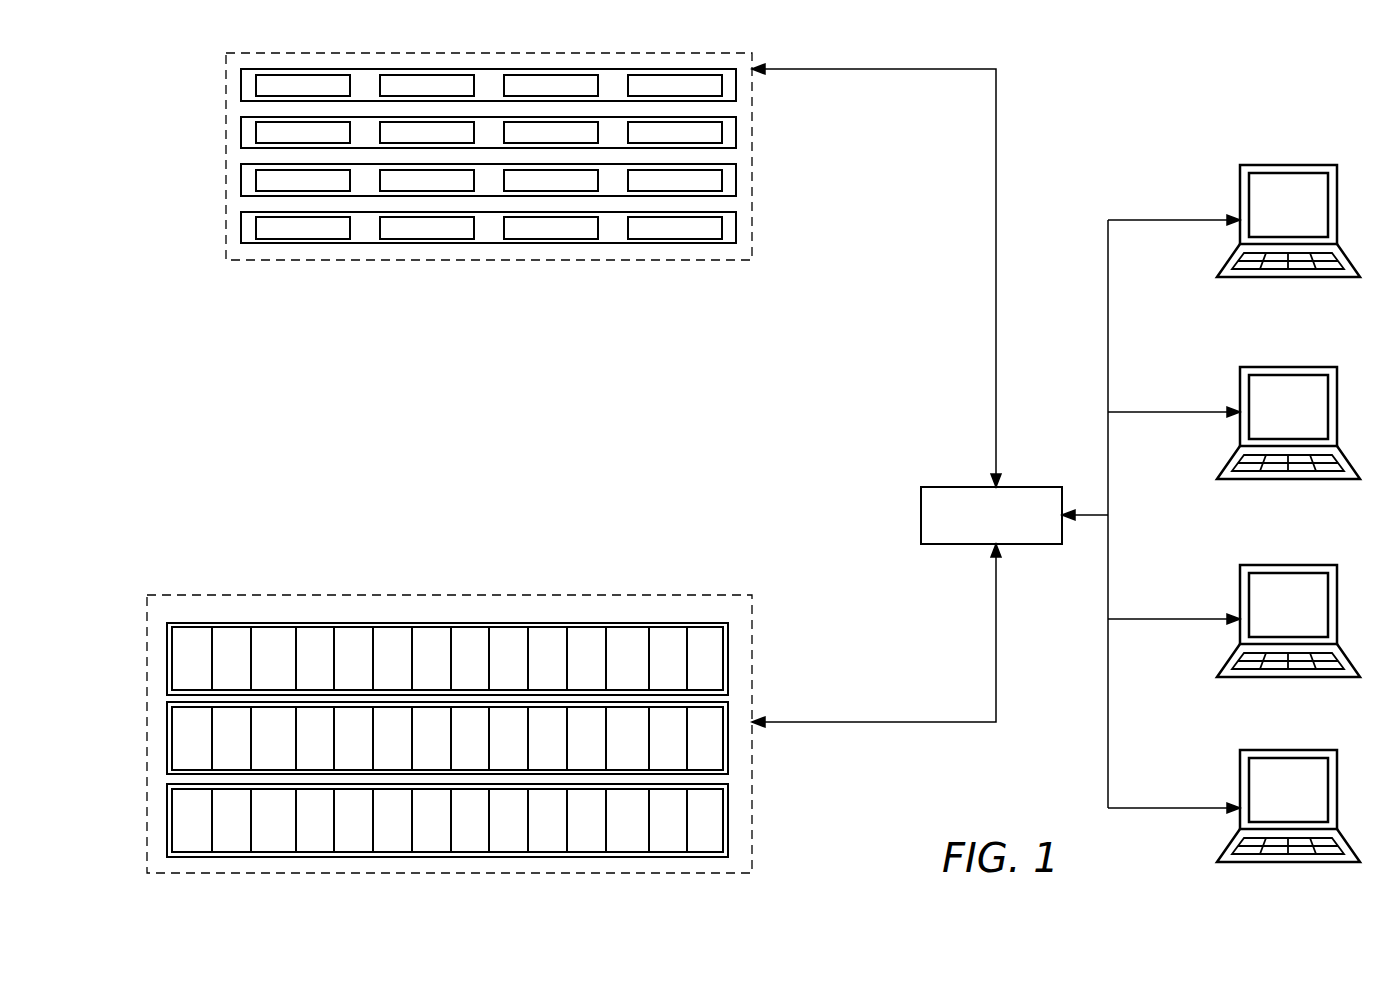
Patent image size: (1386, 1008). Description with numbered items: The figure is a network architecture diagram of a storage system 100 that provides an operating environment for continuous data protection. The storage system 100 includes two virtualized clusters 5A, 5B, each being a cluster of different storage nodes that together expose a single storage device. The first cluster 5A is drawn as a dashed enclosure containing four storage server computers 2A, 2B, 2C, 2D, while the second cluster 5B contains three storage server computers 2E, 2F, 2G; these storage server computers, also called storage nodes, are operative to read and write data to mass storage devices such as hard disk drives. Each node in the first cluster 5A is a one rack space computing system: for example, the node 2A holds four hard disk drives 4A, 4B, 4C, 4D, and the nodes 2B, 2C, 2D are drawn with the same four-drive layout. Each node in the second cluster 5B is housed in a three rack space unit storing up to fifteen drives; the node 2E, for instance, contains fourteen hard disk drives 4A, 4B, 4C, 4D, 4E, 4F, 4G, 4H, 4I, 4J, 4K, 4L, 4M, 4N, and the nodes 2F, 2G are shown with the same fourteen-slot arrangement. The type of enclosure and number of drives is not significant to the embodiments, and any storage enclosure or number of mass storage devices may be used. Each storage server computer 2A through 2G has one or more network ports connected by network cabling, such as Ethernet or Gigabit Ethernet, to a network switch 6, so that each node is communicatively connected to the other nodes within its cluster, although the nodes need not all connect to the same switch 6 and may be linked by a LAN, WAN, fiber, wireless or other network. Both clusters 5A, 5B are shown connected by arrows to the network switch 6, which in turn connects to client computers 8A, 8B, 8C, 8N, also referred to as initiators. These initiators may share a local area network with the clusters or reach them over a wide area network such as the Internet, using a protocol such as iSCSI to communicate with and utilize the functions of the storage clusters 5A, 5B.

The storage system 100 is at (1099, 64).
The virtualized cluster 5A is at (525, 146).
The virtualized cluster 5B is at (482, 722).
The storage server computer 2A is at (532, 91).
The storage server computer 2B is at (532, 139).
The storage server computer 2C is at (532, 186).
The storage server computer 2D is at (533, 234).
The storage server computer 2E is at (490, 659).
The storage server computer 2F is at (490, 741).
The storage server computer 2G is at (492, 820).
The hard disk drive 4A is at (192, 658).
The hard disk drive 4B is at (231, 658).
The hard disk drive 4C is at (273, 658).
The hard disk drive 4D is at (315, 658).
The hard disk drive 4E is at (353, 658).
The hard disk drive 4F is at (392, 658).
The hard disk drive 4G is at (431, 658).
The hard disk drive 4H is at (470, 658).
The hard disk drive 4I is at (508, 658).
The hard disk drive 4J is at (547, 658).
The hard disk drive 4K is at (586, 658).
The hard disk drive 4L is at (627, 658).
The hard disk drive 4M is at (668, 658).
The hard disk drive 4N is at (705, 658).
The network switch 6 is at (990, 504).
The client computer 8A is at (1288, 210).
The client computer 8B is at (1288, 412).
The client computer 8C is at (1288, 610).
The client computer 8N is at (1288, 795).